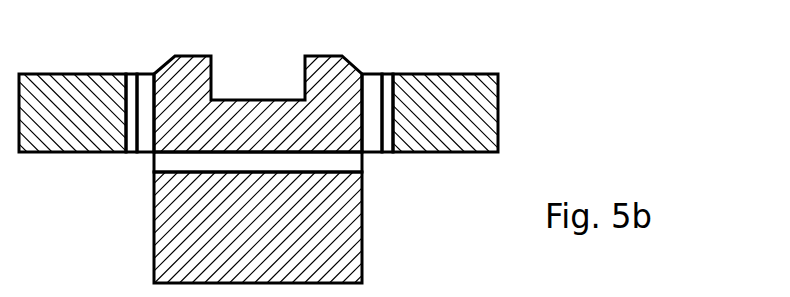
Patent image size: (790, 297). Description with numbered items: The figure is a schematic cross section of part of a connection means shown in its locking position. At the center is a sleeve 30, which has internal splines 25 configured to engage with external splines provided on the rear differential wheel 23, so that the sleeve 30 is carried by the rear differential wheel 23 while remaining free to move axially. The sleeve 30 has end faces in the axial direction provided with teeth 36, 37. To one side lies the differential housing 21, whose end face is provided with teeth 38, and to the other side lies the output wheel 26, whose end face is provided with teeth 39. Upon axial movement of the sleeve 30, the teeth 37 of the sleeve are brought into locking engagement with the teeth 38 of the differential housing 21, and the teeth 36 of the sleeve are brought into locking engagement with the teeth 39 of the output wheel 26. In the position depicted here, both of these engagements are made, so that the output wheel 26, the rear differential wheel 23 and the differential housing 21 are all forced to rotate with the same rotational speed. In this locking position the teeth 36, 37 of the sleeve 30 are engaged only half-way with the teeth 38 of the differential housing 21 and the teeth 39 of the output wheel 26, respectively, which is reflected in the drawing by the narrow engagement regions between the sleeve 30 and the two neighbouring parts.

The differential housing 21 is at (47, 90).
The rear differential wheel 23 is at (165, 219).
The internal splines 25 is at (347, 163).
The output wheel 26 is at (467, 90).
The sleeve 30 is at (328, 92).
The teeth of the sleeve 36 is at (373, 82).
The teeth of the sleeve 37 is at (143, 82).
The teeth of the differential housing 38 is at (128, 82).
The teeth of the output wheel 39 is at (393, 73).